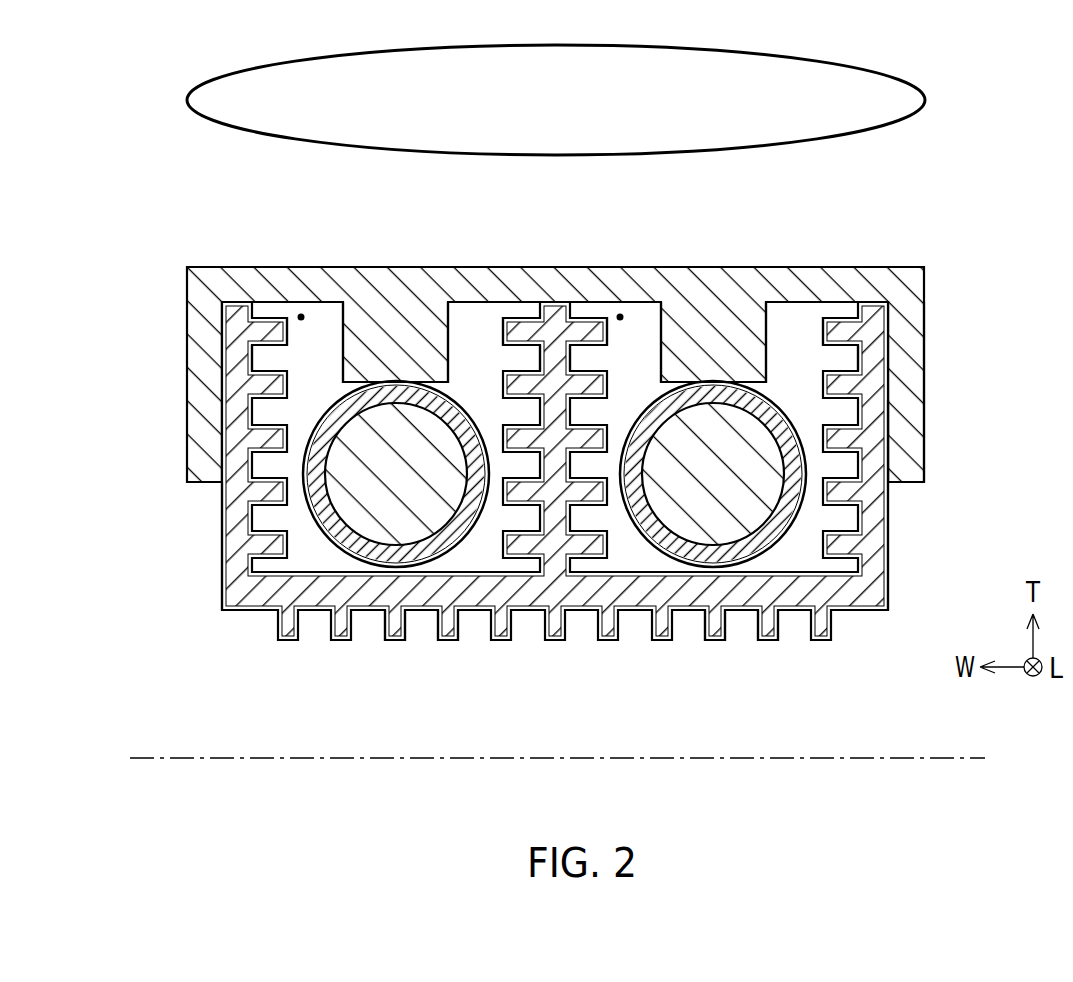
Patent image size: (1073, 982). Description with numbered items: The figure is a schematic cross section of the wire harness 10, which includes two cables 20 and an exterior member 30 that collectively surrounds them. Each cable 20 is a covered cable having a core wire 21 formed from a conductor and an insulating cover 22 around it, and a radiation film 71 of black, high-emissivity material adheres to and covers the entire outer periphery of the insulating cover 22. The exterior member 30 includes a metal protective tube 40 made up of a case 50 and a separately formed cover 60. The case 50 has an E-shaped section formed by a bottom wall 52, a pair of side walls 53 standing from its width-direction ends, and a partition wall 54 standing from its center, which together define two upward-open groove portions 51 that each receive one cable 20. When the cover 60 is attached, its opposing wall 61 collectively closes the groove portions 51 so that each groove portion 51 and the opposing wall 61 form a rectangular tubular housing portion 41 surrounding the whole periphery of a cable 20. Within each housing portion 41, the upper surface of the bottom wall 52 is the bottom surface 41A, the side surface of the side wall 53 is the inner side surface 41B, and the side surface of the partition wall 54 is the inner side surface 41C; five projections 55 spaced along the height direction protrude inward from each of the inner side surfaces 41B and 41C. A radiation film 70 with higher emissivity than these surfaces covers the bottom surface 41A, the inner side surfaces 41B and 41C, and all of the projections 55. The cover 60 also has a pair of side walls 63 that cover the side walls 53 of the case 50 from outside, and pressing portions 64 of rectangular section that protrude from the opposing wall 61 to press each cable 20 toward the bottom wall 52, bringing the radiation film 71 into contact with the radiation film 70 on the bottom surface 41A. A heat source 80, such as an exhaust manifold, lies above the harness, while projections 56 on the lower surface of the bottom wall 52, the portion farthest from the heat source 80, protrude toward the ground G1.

The wire harness 10 is at (981, 190).
The cable 20 is at (534, 560).
The core wire 21 is at (655, 560).
The insulating cover 22 is at (550, 536).
The exterior member 30 is at (554, 338).
The protective tube 40 is at (604, 464).
The housing portion 41 is at (620, 317).
The bottom surface 41A is at (483, 566).
The inner side surface 41B is at (263, 308).
The inner side surface 41C is at (524, 303).
The case 50 is at (887, 357).
The groove portion 51 is at (835, 578).
The bottom wall 52 is at (266, 606).
The side wall 53 is at (888, 540).
The partition wall 54 is at (560, 305).
The projection 55 is at (822, 332).
The projection 56 is at (581, 657).
The cover 60 is at (924, 318).
The opposing wall 61 is at (333, 272).
The side wall 63 is at (950, 418).
The pressing portion 64 is at (735, 340).
The radiation film 70 is at (580, 403).
The radiation film 71 is at (797, 434).
The heat source 80 is at (889, 70).
The ground G1 is at (925, 757).